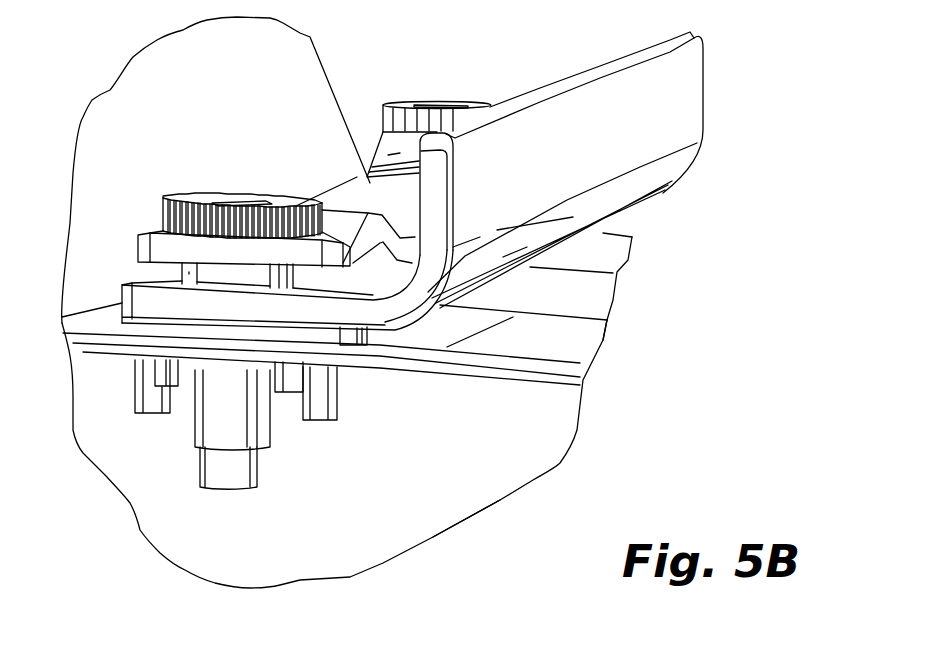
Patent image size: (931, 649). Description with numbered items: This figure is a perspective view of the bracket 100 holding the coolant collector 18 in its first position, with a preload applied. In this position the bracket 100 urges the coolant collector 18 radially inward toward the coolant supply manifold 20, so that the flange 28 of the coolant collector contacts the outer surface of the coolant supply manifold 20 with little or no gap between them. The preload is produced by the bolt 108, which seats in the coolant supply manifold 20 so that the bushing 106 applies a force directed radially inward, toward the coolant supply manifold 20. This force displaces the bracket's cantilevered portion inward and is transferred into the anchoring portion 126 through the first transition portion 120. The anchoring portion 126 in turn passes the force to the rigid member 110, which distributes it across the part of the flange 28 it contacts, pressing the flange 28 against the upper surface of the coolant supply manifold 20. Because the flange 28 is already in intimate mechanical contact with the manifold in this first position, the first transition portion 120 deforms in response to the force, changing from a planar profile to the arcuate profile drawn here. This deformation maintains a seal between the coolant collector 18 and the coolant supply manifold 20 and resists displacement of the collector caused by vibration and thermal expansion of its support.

The coolant collector 18 is at (125, 107).
The coolant supply manifold 20 is at (505, 473).
The flange 28 is at (82, 380).
The bracket 100 is at (665, 316).
The bushing 106 is at (280, 204).
The bolt 108 is at (227, 473).
The rigid member 110 is at (162, 250).
The first transition portion 120 is at (354, 197).
The anchoring portion 126 is at (400, 210).